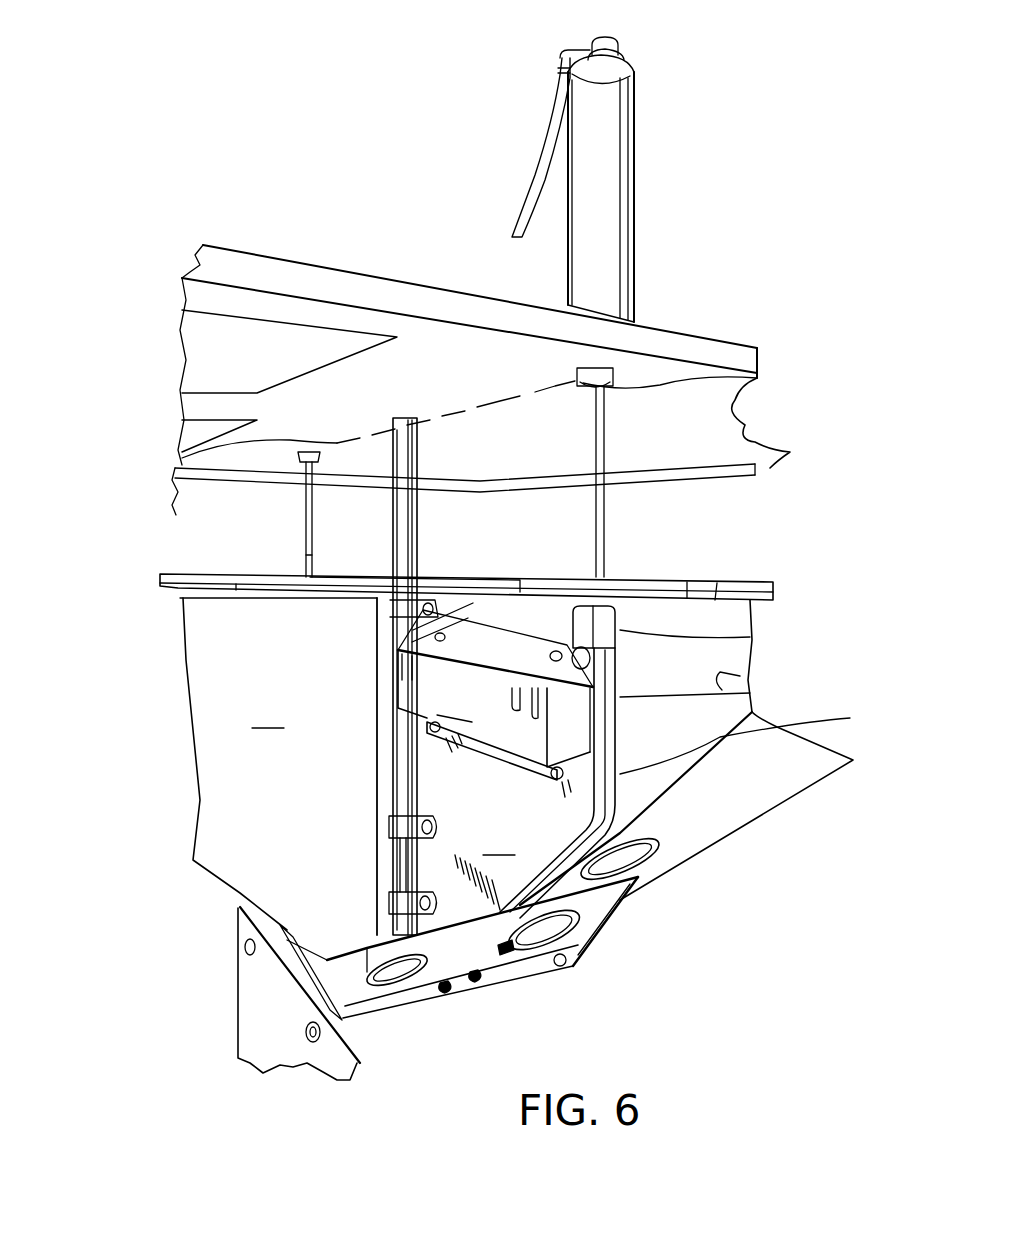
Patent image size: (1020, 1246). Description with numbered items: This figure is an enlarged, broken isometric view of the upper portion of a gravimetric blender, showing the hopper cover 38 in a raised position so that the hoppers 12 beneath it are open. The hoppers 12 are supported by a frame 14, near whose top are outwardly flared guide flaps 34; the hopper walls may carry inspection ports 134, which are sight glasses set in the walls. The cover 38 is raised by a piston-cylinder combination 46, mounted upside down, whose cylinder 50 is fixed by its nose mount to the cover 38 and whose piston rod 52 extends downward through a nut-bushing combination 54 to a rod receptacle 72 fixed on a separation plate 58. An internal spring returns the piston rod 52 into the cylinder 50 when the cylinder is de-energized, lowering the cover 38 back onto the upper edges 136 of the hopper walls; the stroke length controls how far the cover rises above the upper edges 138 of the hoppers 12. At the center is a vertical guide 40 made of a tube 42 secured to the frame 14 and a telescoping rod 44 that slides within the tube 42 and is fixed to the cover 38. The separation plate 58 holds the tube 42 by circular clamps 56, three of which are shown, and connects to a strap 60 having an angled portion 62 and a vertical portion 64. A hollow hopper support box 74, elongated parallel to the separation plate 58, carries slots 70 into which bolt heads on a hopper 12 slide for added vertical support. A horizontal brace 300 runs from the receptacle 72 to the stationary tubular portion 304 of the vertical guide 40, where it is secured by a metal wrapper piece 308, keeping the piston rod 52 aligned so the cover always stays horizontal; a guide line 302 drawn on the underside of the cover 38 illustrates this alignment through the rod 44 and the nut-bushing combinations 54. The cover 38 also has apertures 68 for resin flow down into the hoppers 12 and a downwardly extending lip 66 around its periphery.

The hopper 12 is at (740, 676).
The frame 14 is at (265, 1032).
The outwardly flared guide flap 34 is at (488, 958).
The hopper cover 38 is at (278, 300).
The vertical guide 40 is at (414, 530).
The tube 42 is at (487, 957).
The rod 44 is at (395, 492).
The piston-cylinder combination 46 is at (636, 145).
The cylinder 50 is at (610, 226).
The piston rod 52 is at (305, 556).
The nut-bushing combination 54 is at (306, 464).
The circular clamp 56 is at (420, 835).
The separation plate 58 is at (666, 781).
The strap 60 is at (850, 718).
The angled portion 62 is at (620, 813).
The vertical portion 64 is at (750, 690).
The downwardly extending lip 66 is at (344, 292).
The aperture 68 is at (200, 350).
The slot 70 is at (517, 692).
The rod receptacle 72 is at (750, 640).
The hopper support box 74 is at (495, 685).
The inspection port 134 is at (635, 870).
The upper edge of hopper wall 136 is at (526, 575).
The upper edge of hopper 138 is at (543, 167).
The brace 300 is at (397, 651).
The guide line 302 is at (182, 458).
The stationary tubular portion 304 is at (400, 784).
The wrapper piece 308 is at (392, 612).